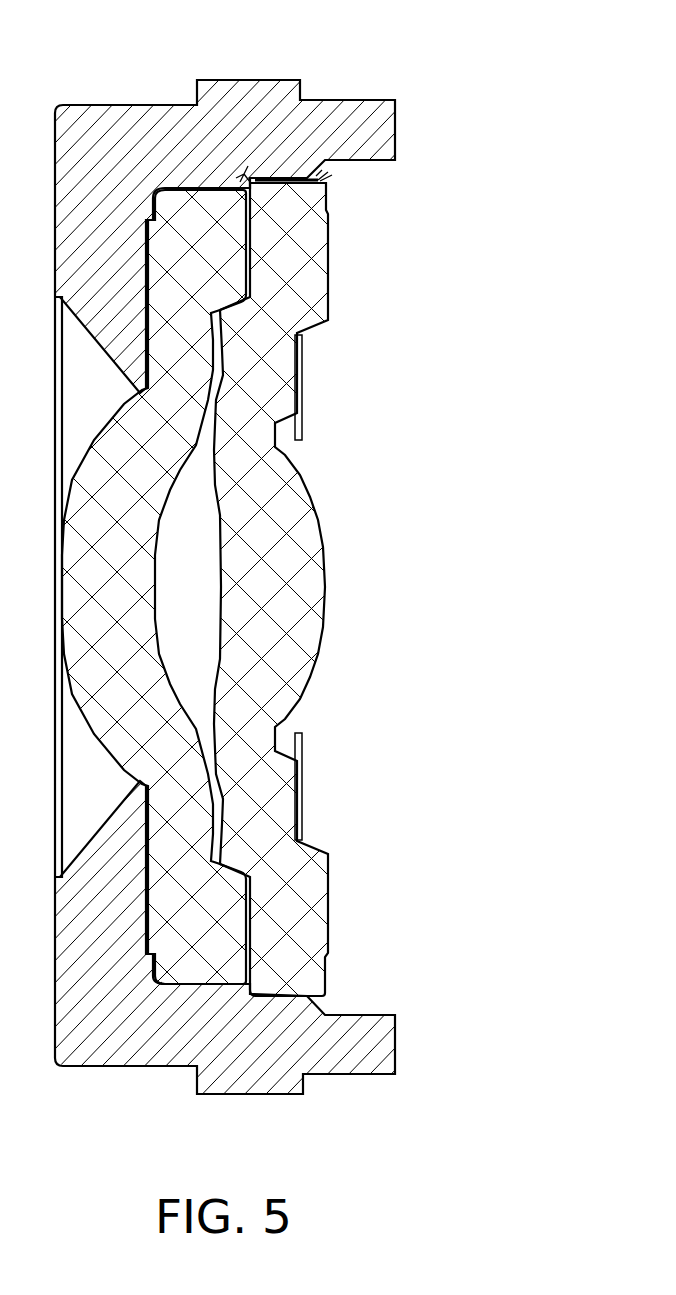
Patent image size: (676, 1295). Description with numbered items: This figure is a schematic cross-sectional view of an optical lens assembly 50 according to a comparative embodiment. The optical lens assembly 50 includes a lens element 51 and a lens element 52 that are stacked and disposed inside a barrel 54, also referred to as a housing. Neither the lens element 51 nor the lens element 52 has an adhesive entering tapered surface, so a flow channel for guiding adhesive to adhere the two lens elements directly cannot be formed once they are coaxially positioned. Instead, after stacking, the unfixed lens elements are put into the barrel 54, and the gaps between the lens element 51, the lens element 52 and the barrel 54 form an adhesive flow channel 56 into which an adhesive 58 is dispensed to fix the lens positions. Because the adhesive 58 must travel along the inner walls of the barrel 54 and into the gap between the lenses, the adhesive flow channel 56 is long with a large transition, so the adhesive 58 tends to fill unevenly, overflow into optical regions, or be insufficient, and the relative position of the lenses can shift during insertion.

The optical lens assembly 50 is at (338, 570).
The lens element 51 is at (228, 273).
The lens element 52 is at (290, 299).
The barrel 54 is at (273, 120).
The adhesive flow channel 56 is at (320, 172).
The adhesive 58 is at (243, 176).